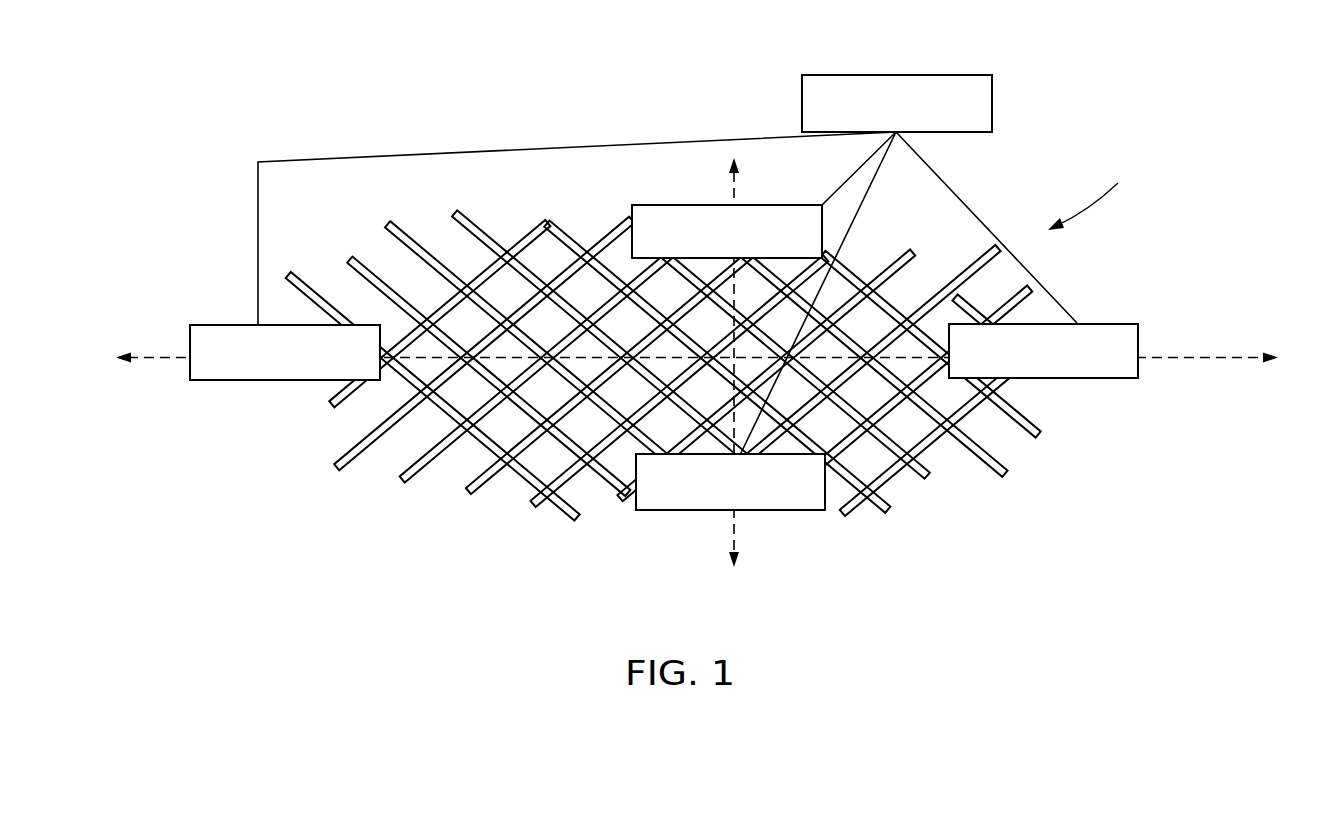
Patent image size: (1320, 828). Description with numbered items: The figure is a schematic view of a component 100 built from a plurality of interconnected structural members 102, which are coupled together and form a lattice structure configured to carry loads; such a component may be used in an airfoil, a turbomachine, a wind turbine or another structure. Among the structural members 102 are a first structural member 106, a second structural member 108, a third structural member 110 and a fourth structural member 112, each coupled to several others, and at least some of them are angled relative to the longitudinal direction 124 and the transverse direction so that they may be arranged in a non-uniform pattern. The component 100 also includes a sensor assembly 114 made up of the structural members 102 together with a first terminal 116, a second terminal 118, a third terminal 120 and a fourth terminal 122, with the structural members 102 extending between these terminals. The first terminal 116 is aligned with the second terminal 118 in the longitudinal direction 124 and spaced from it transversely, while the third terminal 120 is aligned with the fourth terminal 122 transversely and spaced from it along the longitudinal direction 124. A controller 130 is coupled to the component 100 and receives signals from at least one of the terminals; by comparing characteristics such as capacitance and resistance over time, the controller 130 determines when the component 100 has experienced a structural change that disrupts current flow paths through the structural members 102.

The component 100 is at (697, 332).
The structural members 102 is at (663, 393).
The first structural member 106 is at (528, 455).
The second structural member 108 is at (602, 416).
The third structural member 110 is at (600, 372).
The fourth structural member 112 is at (565, 478).
The sensor assembly 114 is at (1108, 201).
The first terminal 116 is at (690, 206).
The second terminal 118 is at (824, 511).
The third terminal 120 is at (219, 323).
The fourth terminal 122 is at (1110, 322).
The longitudinal direction 124 is at (1193, 350).
The controller 130 is at (993, 100).